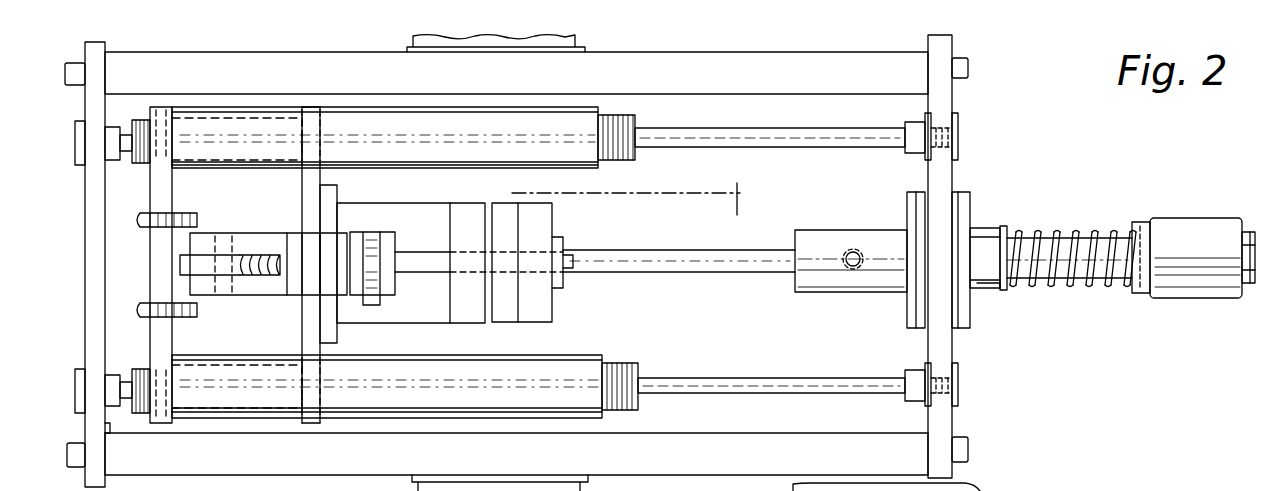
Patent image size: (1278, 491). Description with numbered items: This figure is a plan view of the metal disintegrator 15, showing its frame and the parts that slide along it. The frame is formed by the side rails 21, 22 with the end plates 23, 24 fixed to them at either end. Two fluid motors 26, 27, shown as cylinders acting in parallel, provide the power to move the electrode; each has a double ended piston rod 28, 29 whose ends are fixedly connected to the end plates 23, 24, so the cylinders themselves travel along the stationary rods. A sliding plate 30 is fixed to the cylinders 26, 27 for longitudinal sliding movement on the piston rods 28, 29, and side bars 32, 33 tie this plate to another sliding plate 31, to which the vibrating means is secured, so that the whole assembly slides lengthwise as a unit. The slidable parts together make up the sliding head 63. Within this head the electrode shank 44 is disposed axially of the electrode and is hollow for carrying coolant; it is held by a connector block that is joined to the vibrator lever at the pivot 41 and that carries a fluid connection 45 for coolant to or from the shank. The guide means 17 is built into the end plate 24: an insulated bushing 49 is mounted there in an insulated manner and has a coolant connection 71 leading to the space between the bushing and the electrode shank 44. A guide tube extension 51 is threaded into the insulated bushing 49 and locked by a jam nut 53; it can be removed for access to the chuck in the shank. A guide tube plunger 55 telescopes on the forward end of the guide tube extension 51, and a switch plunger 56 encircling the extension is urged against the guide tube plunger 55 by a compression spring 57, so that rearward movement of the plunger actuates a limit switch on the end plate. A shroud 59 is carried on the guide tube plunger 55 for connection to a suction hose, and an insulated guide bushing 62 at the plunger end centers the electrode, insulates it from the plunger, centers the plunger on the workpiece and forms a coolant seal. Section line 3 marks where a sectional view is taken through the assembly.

The section line 3- 3 is at (160, 195).
The metal disintegrator 15 is at (1021, 127).
The guide means 17 is at (990, 288).
The side rail 21 is at (708, 430).
The side rail 22 is at (673, 62).
The end plate 23 is at (105, 310).
The end plate 24 is at (955, 48).
The fluid motor 26 is at (582, 410).
The fluid motor 27 is at (375, 107).
The double ended piston rod 28 is at (745, 378).
The double ended piston rod 29 is at (715, 130).
The sliding plate 30 is at (172, 186).
The sliding plate 31 is at (302, 190).
The side bar 32 is at (230, 410).
The side bar 33 is at (242, 118).
The pivot 41 is at (217, 295).
The electrode shank 44 is at (668, 252).
The fluid connection 45 is at (262, 250).
The insulated bushing 49 is at (810, 228).
The guide tube extension 51 is at (1100, 228).
The jam nut 53 is at (1003, 228).
The guide tube plunger 55 is at (1250, 230).
The switch plunger 56 is at (1138, 293).
The compression spring 57 is at (1050, 233).
The shroud 59 is at (1185, 218).
The insulated guide bushing 62 is at (1255, 285).
The sliding head 63 is at (437, 304).
The coolant connection 71 is at (855, 250).